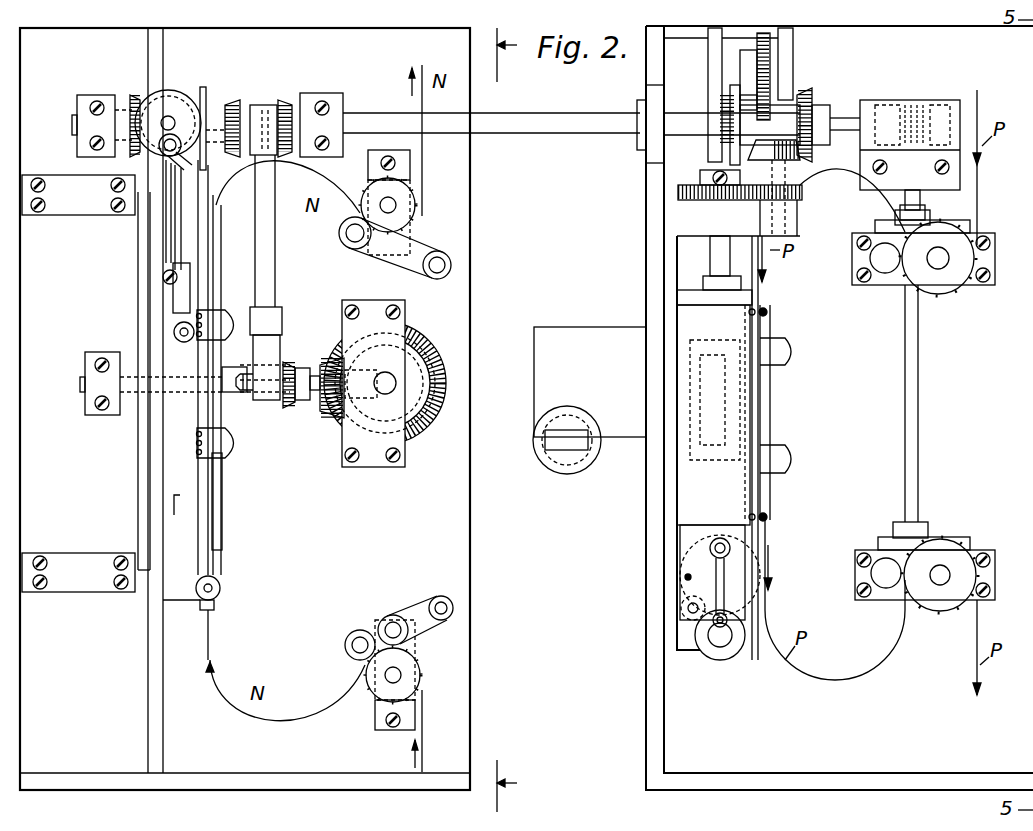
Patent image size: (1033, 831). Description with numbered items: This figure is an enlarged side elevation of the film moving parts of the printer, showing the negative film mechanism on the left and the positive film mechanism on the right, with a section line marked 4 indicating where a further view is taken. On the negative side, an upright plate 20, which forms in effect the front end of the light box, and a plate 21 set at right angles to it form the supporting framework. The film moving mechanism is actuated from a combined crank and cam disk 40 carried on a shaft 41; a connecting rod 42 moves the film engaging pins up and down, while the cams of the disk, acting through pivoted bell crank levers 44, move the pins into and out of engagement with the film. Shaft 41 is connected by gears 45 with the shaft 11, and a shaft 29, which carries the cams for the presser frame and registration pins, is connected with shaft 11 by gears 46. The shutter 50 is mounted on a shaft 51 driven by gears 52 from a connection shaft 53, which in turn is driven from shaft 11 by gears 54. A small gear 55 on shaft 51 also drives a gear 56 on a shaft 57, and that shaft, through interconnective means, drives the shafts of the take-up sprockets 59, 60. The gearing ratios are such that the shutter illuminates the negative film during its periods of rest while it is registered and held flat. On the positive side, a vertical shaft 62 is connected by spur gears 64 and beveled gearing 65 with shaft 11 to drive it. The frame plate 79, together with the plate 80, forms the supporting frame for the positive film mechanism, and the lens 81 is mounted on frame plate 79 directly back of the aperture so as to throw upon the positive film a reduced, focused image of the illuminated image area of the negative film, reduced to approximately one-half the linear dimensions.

The section line 4- 4 is at (508, 420).
The shaft 11 is at (569, 124).
The upright plate 20 is at (150, 291).
The plate 21 is at (245, 409).
The shaft 29 is at (216, 254).
The combined crank and cam disk 40 is at (172, 112).
The shaft 41 is at (164, 118).
The connecting rod 42 is at (176, 224).
The pivoted bell crank lever 44 is at (168, 250).
The gears 45 is at (135, 97).
The gears 46 is at (215, 128).
The shutter 50 is at (140, 440).
The shaft 51 is at (308, 402).
The gears 52 is at (292, 375).
The connection shaft 53 is at (268, 271).
The gears 54 is at (284, 104).
The small gear 55 is at (336, 418).
The gear 56 is at (422, 432).
The shaft 57 is at (392, 378).
The take-up sprocket 59 is at (410, 676).
The take-up sprocket 60 is at (416, 207).
The vertical shaft 62 is at (716, 258).
The spur gears 64 is at (678, 192).
The beveled gearing 65 is at (809, 104).
The frame plate 79 is at (660, 246).
The plate 80 is at (910, 146).
The lens 81 is at (589, 400).